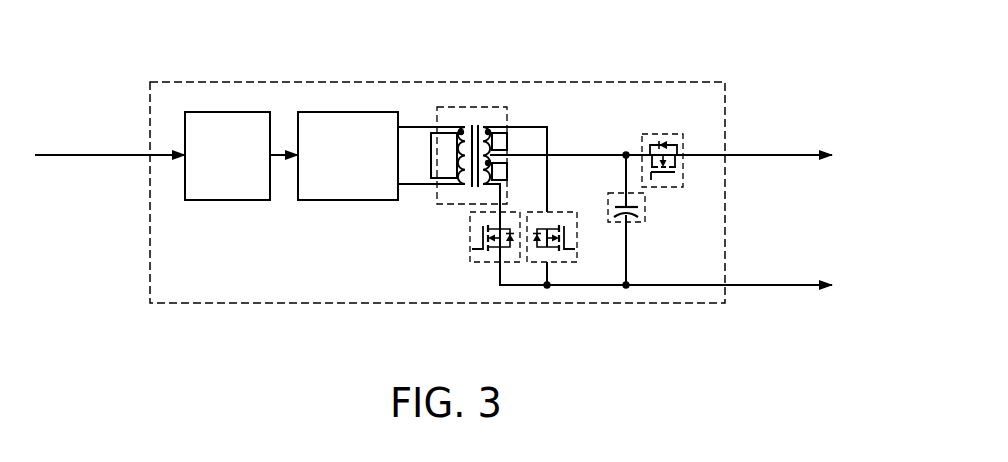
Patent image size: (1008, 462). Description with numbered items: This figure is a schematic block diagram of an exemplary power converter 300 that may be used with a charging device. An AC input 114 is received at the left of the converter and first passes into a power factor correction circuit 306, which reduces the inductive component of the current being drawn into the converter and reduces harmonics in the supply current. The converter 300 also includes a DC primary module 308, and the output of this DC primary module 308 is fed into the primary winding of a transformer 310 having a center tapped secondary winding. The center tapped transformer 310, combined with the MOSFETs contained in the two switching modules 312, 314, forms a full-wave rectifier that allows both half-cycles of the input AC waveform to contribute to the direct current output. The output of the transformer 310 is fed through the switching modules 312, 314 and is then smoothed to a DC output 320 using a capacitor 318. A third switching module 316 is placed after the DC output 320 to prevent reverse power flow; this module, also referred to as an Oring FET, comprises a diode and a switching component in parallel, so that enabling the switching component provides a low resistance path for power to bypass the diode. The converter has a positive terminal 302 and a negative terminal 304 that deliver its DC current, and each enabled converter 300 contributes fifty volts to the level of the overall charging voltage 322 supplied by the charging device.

The AC input 114 is at (77, 128).
The power converter 300 is at (495, 82).
The input terminal 302 is at (763, 155).
The output terminal 304 is at (782, 287).
The power factor correction (PFC) circuit 306 is at (225, 112).
The DC primary module 308 is at (345, 112).
The transformer 310 is at (500, 106).
The switching module 312 is at (478, 262).
The switching module 314 is at (563, 262).
The third switching module 316 is at (683, 140).
The capacitor 318 is at (645, 212).
The DC output 320 is at (671, 238).
The charging voltage 322 is at (823, 198).